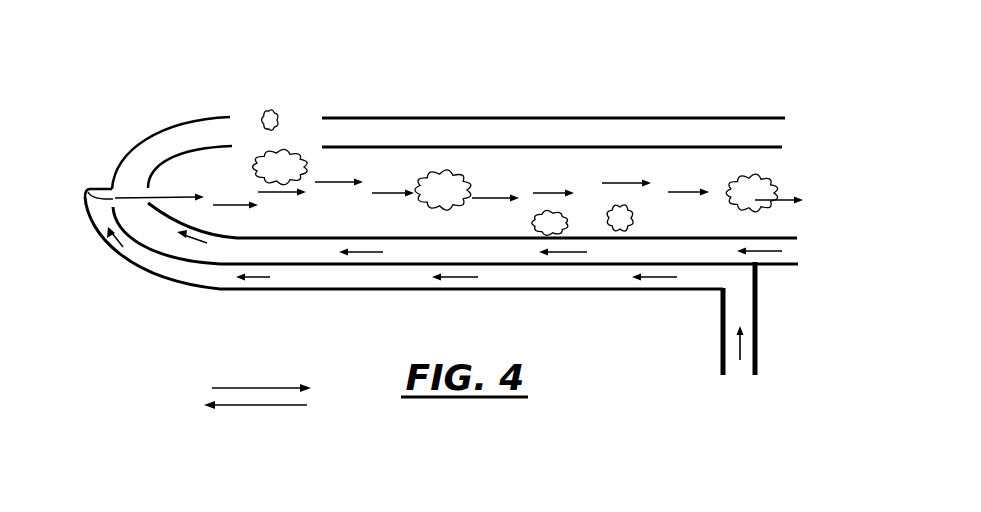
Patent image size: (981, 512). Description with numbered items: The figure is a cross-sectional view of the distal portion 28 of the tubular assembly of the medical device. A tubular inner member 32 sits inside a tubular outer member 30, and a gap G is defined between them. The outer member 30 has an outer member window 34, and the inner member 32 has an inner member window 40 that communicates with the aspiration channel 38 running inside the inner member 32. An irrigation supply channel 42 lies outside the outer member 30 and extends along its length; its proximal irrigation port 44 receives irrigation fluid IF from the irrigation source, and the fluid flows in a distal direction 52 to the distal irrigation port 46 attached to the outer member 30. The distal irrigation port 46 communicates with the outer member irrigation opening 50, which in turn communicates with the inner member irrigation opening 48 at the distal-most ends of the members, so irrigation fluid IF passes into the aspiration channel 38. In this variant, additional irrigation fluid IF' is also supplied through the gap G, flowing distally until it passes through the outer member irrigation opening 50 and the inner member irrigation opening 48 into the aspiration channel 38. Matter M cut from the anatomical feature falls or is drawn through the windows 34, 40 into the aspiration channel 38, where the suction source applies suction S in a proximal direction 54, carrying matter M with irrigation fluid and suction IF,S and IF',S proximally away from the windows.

The distal portion 28 is at (138, 50).
The outer member 30 is at (590, 115).
The inner member 32 is at (628, 147).
The outer member window 34 is at (308, 119).
The aspiration channel 38 is at (663, 170).
The inner member window 40 is at (240, 157).
The irrigation supply channel 42 is at (338, 278).
The proximal irrigation port 44 is at (760, 350).
The distal irrigation port 46 is at (85, 207).
The inner member irrigation opening 48 is at (157, 183).
The outer member irrigation opening 50 is at (95, 188).
The distal direction 52 is at (277, 407).
The proximal direction 54 is at (268, 385).
The matter M is at (268, 112).
The gap G is at (403, 250).
The irrigation fluid IF is at (398, 308).
The irrigation fluid IF' is at (474, 290).
The irrigation fluid and suction IF,S is at (385, 192).
The irrigation fluid and suction IF',S is at (354, 198).